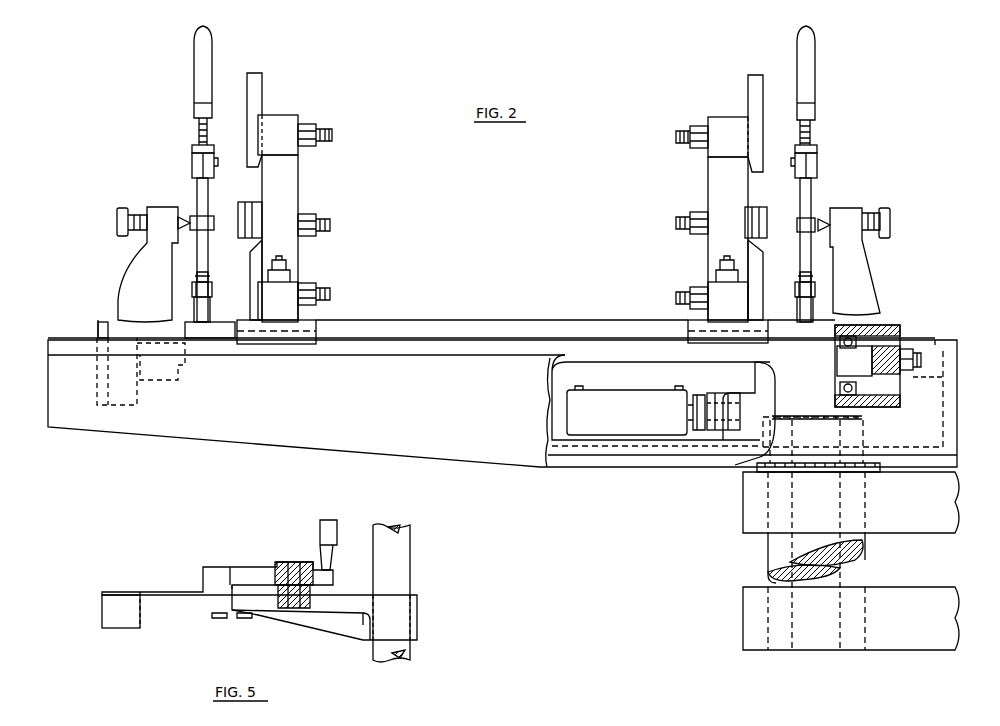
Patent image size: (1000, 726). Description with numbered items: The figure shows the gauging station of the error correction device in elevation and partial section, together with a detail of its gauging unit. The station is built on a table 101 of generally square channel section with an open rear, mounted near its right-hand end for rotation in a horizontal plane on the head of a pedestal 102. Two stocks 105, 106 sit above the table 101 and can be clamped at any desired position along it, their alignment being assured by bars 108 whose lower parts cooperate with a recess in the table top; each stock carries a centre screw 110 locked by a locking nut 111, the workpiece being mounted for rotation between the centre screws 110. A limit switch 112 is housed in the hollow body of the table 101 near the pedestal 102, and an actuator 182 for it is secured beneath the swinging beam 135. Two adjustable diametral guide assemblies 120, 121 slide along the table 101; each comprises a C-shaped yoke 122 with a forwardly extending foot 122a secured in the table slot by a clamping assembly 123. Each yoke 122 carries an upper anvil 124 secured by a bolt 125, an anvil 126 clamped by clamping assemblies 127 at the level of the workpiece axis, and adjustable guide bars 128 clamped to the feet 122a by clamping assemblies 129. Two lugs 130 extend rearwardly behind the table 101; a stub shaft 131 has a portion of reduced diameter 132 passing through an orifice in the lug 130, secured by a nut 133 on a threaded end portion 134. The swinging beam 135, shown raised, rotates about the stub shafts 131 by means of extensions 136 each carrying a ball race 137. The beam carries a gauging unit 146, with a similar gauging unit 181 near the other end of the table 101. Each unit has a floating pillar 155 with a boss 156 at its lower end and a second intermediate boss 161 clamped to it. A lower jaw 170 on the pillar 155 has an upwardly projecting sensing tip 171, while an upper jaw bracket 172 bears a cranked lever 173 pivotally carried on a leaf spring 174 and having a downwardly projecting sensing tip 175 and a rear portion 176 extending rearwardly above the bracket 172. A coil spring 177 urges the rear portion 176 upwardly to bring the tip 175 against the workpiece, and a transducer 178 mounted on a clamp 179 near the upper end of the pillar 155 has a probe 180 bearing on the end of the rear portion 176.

In FIG. 2, the table 101 is at (428, 340).
In FIG. 2, the pedestal 102 is at (775, 575).
In FIG. 2, the stock 105 is at (140, 264).
In FIG. 2, the stock 106 is at (860, 266).
In FIG. 2, the bar 108 is at (103, 322).
In FIG. 2, the centre screw 110 is at (120, 208).
In FIG. 2, the locking nut 111 is at (134, 215).
In FIG. 2, the limit switch 112 is at (698, 395).
In FIG. 2, the adjustable diametral guide assembly 120 is at (300, 115).
In FIG. 2, the adjustable diametral guide assembly 121 is at (702, 118).
In FIG. 2, the C-shaped yoke 122 is at (290, 187).
In FIG. 2, the foot 122a is at (296, 277).
In FIG. 2, the clamping assembly 123 is at (284, 258).
In FIG. 2, the upper anvil 124 is at (262, 86).
In FIG. 2, the bolt 125 is at (332, 135).
In FIG. 2, the anvil 126 is at (248, 204).
In FIG. 2, the clamping assembly 127 is at (330, 224).
In FIG. 2, the adjustable guide bar 128 is at (252, 262).
In FIG. 2, the clamping assembly 129 is at (330, 293).
In FIG. 2, the lug 130 is at (868, 386).
In FIG. 2, the stub shaft 131 is at (860, 350).
In FIG. 2, the portion of reduced diameter 132 is at (885, 355).
In FIG. 2, the nut 133 is at (905, 350).
In FIG. 2, the threaded end portion 134 is at (921, 357).
In FIG. 2, the swinging beam 135 is at (492, 320).
In FIG. 2, the extension 136 is at (845, 404).
In FIG. 2, the ball race 137 is at (840, 388).
In FIG. 2, the gauging unit 146 is at (831, 91).
In FIG. 2, the floating pillar 155 is at (197, 196).
In FIG. 5, the floating pillar 155 is at (410, 552).
In FIG. 2, the boss 156 is at (194, 308).
In FIG. 2, the second intermediate boss 161 is at (214, 224).
In FIG. 2, the lower jaw 170 is at (192, 290).
In FIG. 2, the sensing tip 171 is at (208, 274).
In FIG. 2, the upper jaw bracket 172 is at (192, 164).
In FIG. 5, the upper jaw bracket 172 is at (330, 622).
In FIG. 2, the cranked lever 173 is at (192, 149).
In FIG. 5, the cranked lever 173 is at (190, 588).
In FIG. 5, the leaf spring 174 is at (236, 618).
In FIG. 2, the sensing tip 175 is at (218, 164).
In FIG. 5, the sensing tip 175 is at (125, 628).
In FIG. 5, the rear portion 176 is at (243, 567).
In FIG. 5, the coil spring 177 is at (292, 562).
In FIG. 2, the transducer 178 is at (212, 62).
In FIG. 2, the clamp 179 is at (194, 108).
In FIG. 2, the probe 180 is at (199, 132).
In FIG. 5, the probe 180 is at (320, 530).
In FIG. 2, the gauging unit 181 is at (188, 83).
In FIG. 2, the actuator 182 is at (748, 406).